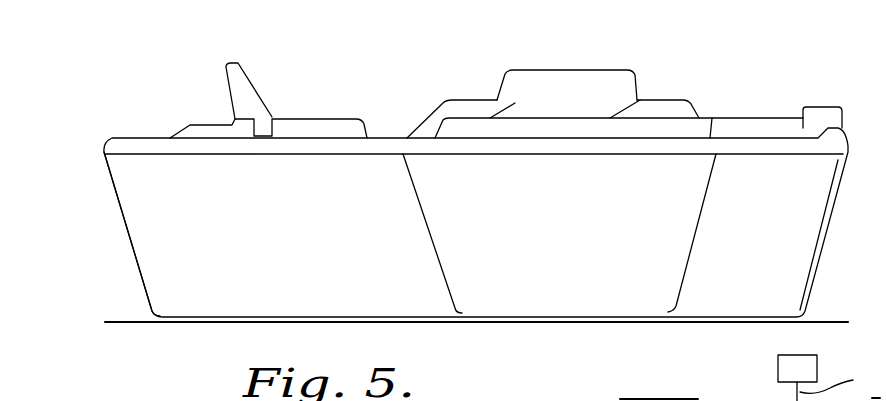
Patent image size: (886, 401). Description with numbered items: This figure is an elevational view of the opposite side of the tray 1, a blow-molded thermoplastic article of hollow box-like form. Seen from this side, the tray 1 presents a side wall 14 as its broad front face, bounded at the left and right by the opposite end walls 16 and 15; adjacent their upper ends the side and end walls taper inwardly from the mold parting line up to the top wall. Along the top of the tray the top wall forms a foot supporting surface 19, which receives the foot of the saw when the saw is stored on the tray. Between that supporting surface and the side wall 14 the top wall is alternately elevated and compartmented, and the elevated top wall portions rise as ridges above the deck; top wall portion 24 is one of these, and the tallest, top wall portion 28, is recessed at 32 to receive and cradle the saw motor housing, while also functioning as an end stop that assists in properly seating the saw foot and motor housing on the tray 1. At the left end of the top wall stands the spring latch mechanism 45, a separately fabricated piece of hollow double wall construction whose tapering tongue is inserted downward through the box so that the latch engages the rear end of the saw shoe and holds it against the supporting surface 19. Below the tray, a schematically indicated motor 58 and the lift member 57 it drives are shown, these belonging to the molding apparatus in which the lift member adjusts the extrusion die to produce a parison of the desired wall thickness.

The tray 1 is at (100, 214).
The side wall 14 is at (405, 222).
The end wall 15 is at (830, 238).
The end wall 16 is at (140, 282).
The foot supporting surface 19 is at (712, 118).
The top wall portion 24 is at (780, 115).
The top wall portion 28 is at (577, 70).
The recess 32 is at (568, 117).
The spring latch mechanism 45 is at (212, 79).
The lift member 57 is at (839, 373).
The motor 58 is at (780, 362).